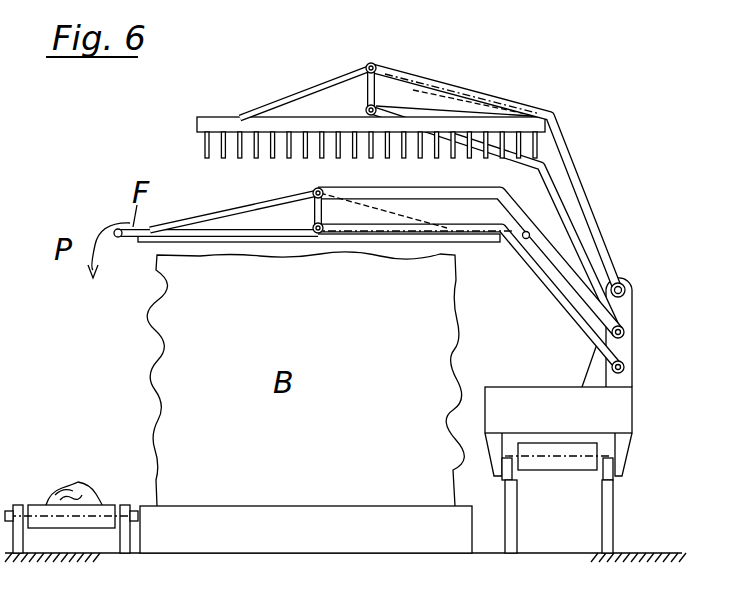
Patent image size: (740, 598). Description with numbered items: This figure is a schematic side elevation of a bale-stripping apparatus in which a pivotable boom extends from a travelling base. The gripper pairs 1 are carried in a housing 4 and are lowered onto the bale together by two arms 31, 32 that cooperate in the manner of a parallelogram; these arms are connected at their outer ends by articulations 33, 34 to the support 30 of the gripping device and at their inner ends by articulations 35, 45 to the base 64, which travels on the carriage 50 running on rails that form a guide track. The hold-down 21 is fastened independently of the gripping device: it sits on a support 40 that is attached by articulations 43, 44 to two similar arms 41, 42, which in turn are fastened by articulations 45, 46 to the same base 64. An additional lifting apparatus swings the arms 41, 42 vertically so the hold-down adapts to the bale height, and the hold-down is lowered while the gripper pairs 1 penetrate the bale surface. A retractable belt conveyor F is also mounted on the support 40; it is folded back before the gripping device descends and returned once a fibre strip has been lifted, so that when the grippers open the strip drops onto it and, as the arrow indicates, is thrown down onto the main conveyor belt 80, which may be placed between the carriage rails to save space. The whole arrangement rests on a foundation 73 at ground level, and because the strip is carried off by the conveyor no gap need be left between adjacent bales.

The gripper pairs 1 is at (205, 151).
The housing 4 is at (220, 122).
The hold-down 21 is at (262, 244).
The support 30 is at (300, 95).
The arm 31 is at (565, 150).
The arm 32 is at (555, 188).
The articulation 33 is at (376, 66).
The articulation 34 is at (366, 110).
The articulation 35 is at (625, 292).
The support 40 is at (215, 222).
The arm 41 is at (548, 247).
The arm 42 is at (552, 288).
The articulation 43 is at (312, 192).
The articulation 44 is at (320, 232).
The articulation 45 is at (623, 332).
The articulation 46 is at (623, 366).
The carriage 50 is at (615, 413).
The base 64 is at (615, 380).
The base foundation 73 is at (340, 545).
The main conveyor belt 80 is at (37, 508).